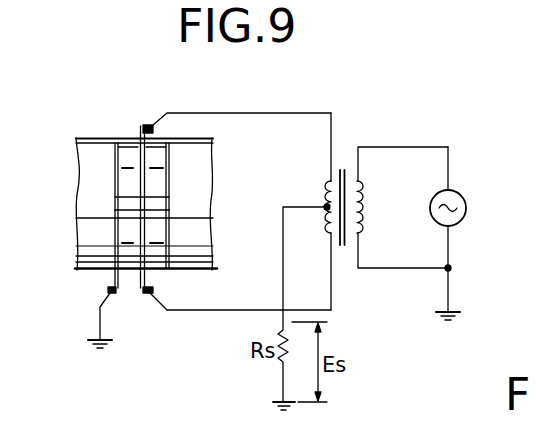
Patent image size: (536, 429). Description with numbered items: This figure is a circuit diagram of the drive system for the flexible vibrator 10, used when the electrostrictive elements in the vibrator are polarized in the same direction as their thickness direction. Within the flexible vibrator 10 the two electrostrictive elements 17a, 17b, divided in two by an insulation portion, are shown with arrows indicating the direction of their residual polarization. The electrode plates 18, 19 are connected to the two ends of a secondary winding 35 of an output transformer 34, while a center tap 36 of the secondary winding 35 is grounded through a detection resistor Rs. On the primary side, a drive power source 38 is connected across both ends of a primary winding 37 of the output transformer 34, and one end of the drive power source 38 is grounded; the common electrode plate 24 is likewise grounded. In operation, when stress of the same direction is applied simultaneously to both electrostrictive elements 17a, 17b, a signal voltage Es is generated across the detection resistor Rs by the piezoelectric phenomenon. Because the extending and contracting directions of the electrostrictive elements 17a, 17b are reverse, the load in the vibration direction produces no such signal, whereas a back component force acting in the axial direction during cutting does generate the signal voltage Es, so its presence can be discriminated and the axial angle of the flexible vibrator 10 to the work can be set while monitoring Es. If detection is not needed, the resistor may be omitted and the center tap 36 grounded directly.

The flexible vibrator 10 is at (92, 172).
The electrostrictive element 17a is at (128, 140).
The electrostrictive element 17b is at (127, 272).
The electrode plate 18 is at (144, 125).
The electrode plate 19 is at (143, 295).
The common electrode plate 24 is at (107, 278).
The output transformer 34 is at (343, 168).
The secondary winding 35 is at (327, 183).
The center tap 36 is at (325, 205).
The primary winding 37 is at (364, 195).
The drive power source 38 is at (465, 202).